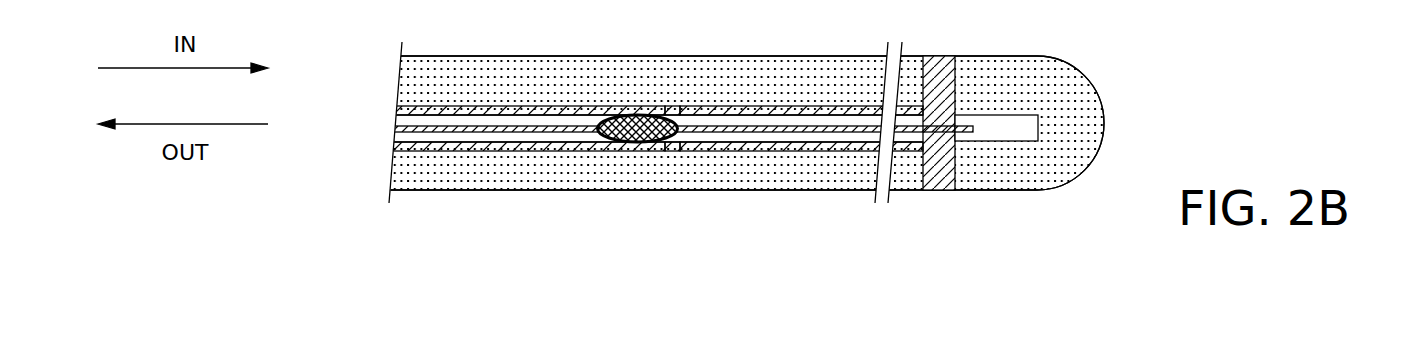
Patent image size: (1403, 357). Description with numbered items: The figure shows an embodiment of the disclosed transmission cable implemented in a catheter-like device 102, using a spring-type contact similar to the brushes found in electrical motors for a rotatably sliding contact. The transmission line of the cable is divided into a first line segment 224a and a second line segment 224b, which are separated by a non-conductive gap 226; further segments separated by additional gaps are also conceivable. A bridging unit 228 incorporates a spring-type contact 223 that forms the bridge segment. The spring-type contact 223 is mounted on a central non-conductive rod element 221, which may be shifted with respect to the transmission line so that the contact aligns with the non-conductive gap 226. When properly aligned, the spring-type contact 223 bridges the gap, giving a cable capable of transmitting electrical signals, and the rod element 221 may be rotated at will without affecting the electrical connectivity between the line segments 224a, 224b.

The catheter-like device 102 is at (422, 178).
The non-conductive rod element 221 is at (397, 127).
The spring-type contact 223 is at (610, 143).
The first line segment 224a is at (497, 145).
The second line segment 224b is at (772, 145).
The non-conductive gap 226 is at (674, 143).
The bridging unit 228 is at (600, 101).